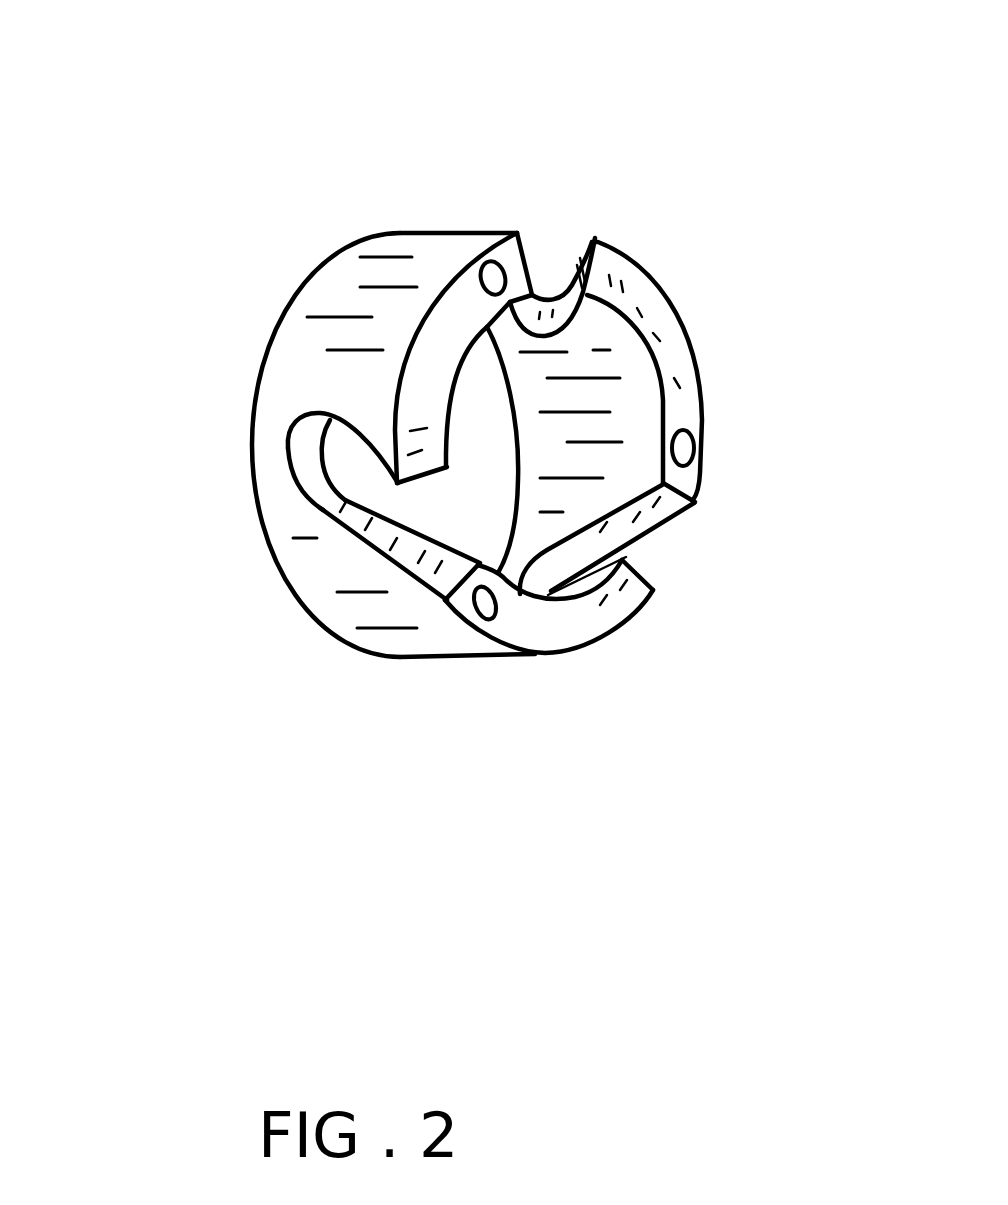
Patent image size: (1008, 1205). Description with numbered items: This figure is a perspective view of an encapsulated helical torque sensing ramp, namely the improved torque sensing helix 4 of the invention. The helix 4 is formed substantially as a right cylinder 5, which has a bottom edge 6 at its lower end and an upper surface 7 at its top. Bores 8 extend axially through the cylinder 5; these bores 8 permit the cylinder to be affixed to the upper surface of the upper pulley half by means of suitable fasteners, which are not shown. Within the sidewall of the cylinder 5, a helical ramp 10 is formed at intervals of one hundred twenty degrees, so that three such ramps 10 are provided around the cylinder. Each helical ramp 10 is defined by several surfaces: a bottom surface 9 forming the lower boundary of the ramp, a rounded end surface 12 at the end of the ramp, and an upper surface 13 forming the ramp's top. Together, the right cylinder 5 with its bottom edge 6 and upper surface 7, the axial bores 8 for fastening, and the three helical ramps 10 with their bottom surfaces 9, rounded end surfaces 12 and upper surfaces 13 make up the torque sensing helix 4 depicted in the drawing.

The torque sensing helix 4 is at (722, 318).
The right cylinder 5 is at (298, 345).
The bottom edge 6 is at (253, 414).
The upper surface 7 is at (630, 268).
The bores 8 is at (517, 235).
The bottom surface 9 is at (432, 567).
The helical ramp 10 is at (692, 540).
The rounded end surface 12 is at (307, 450).
The upper surface 13 is at (590, 240).